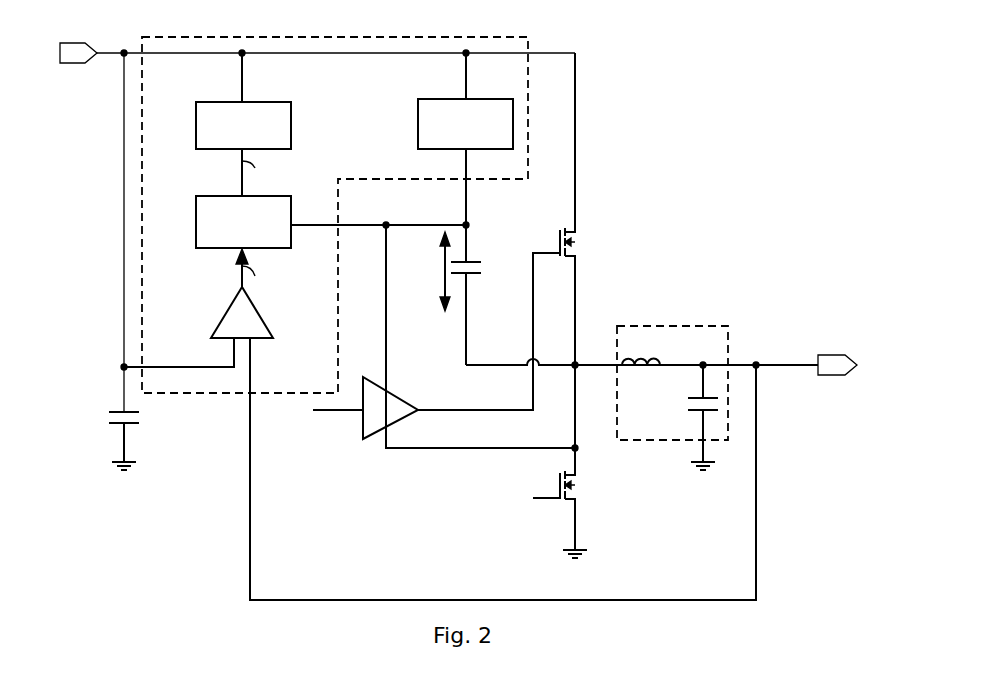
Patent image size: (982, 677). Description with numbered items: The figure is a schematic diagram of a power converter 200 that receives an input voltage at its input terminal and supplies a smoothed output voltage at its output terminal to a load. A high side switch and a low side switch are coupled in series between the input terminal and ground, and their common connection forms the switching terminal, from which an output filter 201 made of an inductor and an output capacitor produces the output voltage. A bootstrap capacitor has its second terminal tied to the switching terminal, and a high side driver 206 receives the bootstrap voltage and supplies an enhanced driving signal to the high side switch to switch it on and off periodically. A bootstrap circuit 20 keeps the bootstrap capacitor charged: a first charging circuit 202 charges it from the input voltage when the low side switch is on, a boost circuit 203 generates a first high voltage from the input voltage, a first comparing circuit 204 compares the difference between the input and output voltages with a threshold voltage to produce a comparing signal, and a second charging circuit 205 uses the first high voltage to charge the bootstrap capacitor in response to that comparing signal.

The power converter 200 is at (750, 126).
The bootstrap circuit 20 is at (365, 179).
The output filter 201 is at (680, 329).
The first charging circuit 202 is at (418, 120).
The boost circuit 203 is at (196, 116).
The first comparing circuit 204 is at (218, 320).
The second charging circuit 205 is at (196, 213).
The high side driver 206 is at (390, 408).